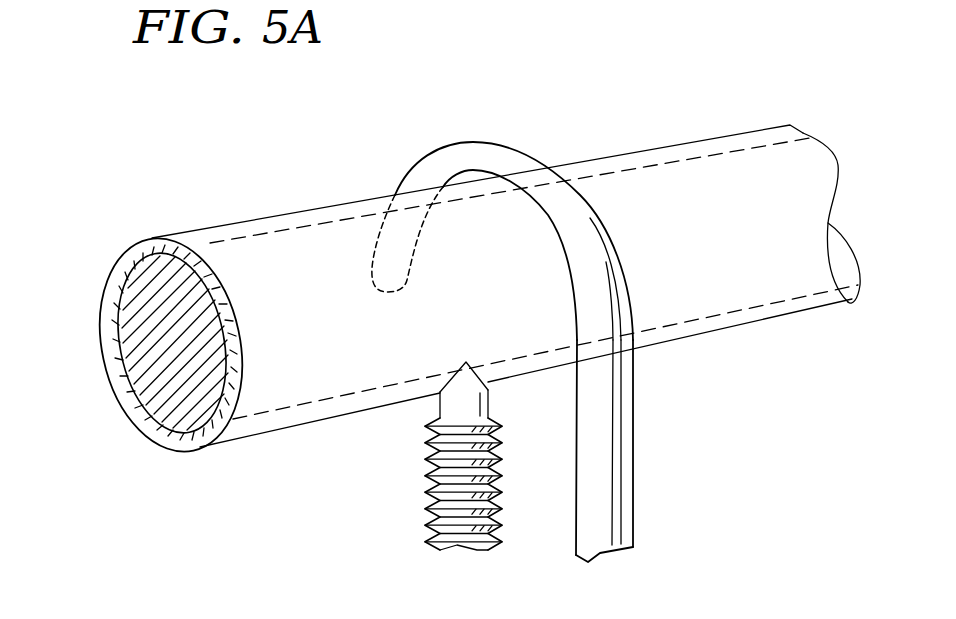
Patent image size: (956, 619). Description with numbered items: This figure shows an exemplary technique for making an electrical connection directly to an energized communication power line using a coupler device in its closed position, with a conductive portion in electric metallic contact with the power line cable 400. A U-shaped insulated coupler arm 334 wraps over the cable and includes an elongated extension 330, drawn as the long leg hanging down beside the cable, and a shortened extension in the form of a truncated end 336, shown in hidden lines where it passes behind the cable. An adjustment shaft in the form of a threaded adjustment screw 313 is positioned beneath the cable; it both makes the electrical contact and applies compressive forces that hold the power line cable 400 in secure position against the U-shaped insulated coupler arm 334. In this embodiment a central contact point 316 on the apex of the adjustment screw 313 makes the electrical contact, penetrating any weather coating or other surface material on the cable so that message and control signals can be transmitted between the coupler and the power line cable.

The power line cable 400 is at (260, 220).
The U-shaped insulated coupler arm 334 is at (502, 150).
The truncated end 336 is at (372, 288).
The central contact point 316 is at (466, 358).
The threaded adjustment screw 313 is at (418, 415).
The elongated extension 330 is at (558, 317).